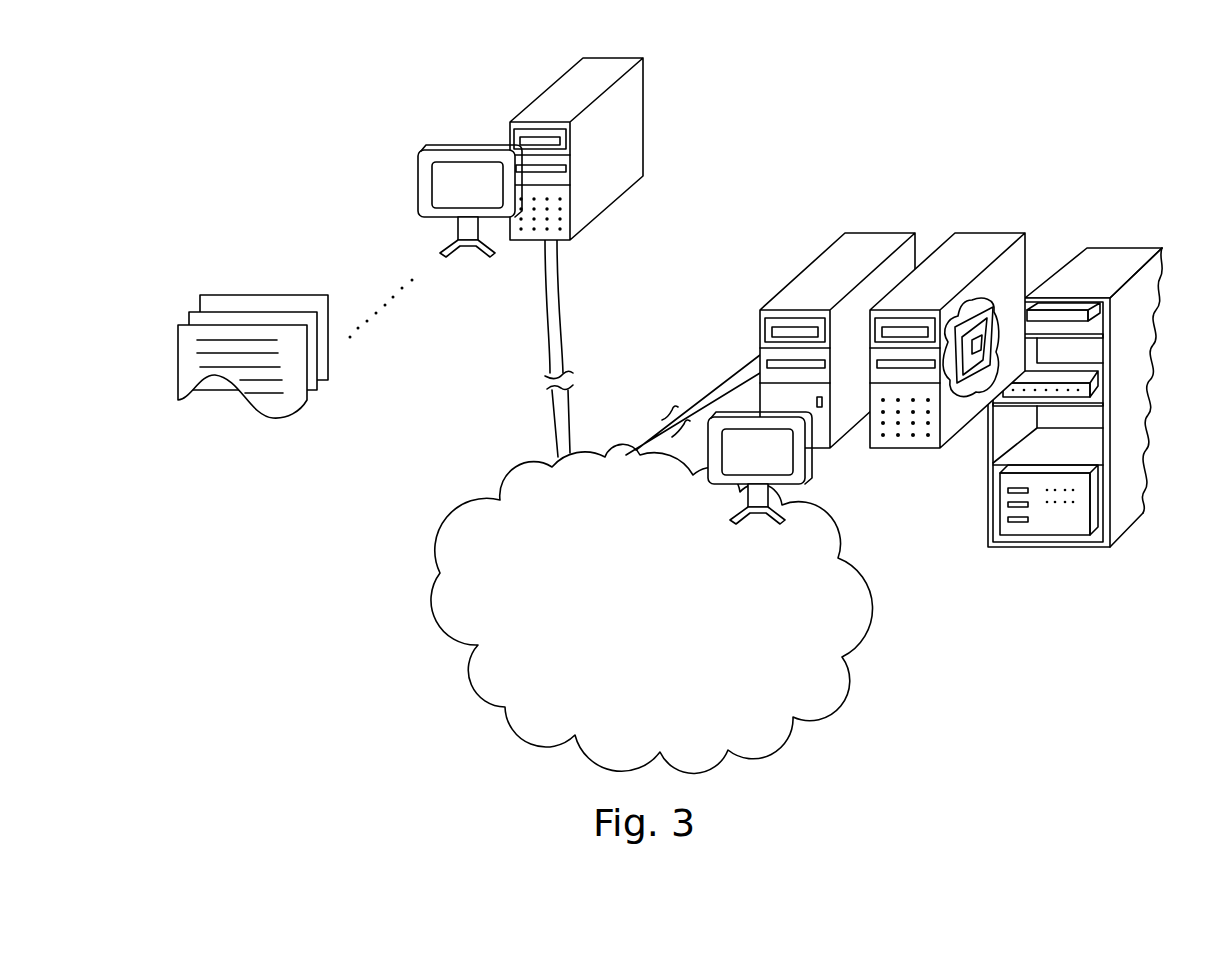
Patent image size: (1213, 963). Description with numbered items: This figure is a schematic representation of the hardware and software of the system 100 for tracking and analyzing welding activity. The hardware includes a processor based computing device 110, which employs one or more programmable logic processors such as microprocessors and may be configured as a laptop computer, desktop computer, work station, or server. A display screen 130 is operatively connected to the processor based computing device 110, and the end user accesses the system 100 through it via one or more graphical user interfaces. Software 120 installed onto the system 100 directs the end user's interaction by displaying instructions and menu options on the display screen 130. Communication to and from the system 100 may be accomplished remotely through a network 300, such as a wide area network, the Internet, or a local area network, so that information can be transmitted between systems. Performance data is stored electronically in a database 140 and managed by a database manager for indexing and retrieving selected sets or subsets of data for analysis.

The system for tracking and analyzing welding activity 100 is at (686, 268).
The processor based computing device 110 is at (620, 58).
The software 120 is at (241, 390).
The display screen 130 is at (418, 190).
The database 140 is at (1135, 248).
The network 300 is at (440, 613).